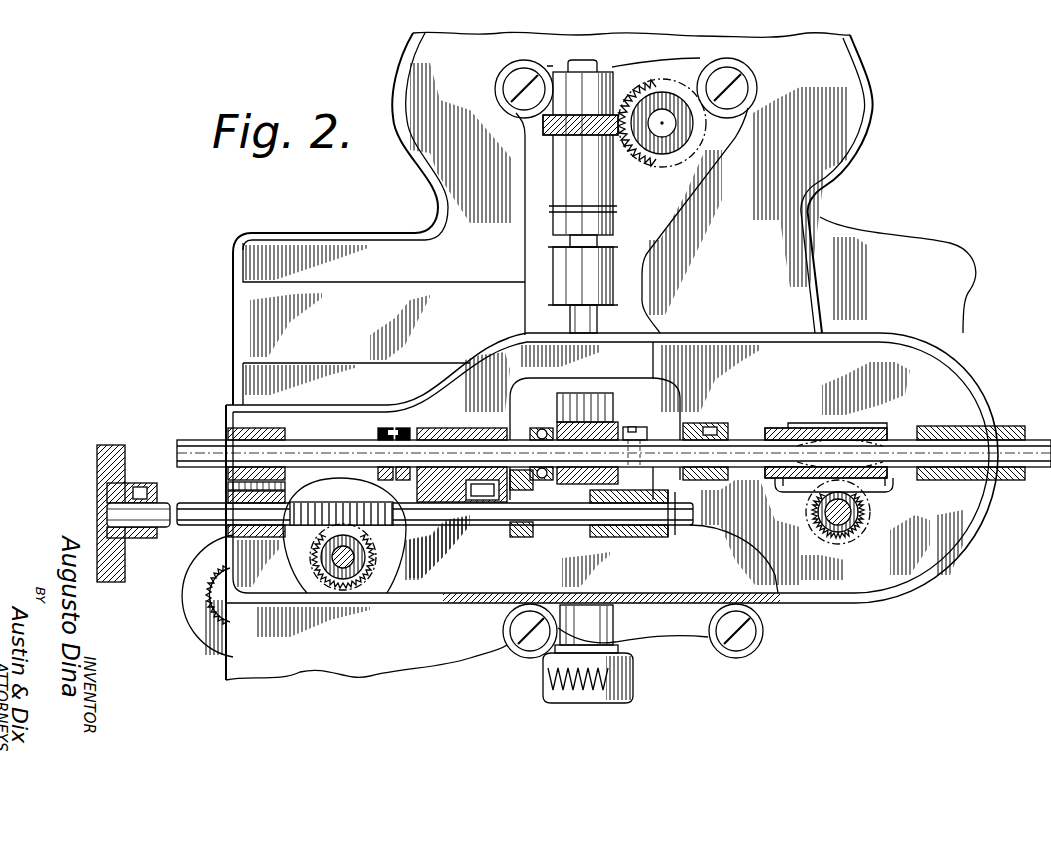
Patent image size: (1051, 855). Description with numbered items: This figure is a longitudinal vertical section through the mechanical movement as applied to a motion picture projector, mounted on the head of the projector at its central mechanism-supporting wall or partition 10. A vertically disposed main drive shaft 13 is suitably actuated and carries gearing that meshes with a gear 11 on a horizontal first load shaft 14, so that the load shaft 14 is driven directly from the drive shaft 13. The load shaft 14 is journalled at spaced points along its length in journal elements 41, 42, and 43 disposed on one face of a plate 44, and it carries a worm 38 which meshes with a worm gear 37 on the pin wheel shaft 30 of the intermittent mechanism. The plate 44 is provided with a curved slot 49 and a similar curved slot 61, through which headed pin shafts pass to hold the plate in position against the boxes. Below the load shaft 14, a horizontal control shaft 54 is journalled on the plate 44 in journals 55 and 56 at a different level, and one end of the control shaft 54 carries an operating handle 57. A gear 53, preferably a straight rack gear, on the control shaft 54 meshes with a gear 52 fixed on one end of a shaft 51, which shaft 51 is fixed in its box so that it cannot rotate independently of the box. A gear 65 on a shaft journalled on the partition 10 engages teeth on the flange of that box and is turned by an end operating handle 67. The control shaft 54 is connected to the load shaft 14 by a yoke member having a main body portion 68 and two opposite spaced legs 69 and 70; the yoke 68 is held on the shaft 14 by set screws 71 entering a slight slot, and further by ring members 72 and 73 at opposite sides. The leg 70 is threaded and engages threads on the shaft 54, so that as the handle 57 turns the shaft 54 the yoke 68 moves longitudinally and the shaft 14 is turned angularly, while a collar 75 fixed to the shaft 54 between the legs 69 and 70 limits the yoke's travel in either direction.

The mechanism-supporting wall or partition 10 is at (604, 218).
The gear 11 is at (599, 418).
The main drive shaft 13 is at (585, 316).
The first load shaft 14 is at (745, 440).
The pin wheel shaft 30 is at (852, 508).
The worm gear 37 is at (812, 514).
The worm 38 is at (802, 428).
The journal element 41 is at (225, 432).
The journal element 42 is at (723, 412).
The journal element 43 is at (1005, 426).
The plate 44 is at (612, 506).
The curved slot 49 is at (873, 488).
The shaft 51 is at (344, 568).
The gear 52 is at (380, 558).
The gear 53 is at (308, 549).
The control shaft 54 is at (203, 503).
The journal 55 is at (217, 535).
The journal 56 is at (628, 536).
The operating handle 57 is at (110, 486).
The curved slot 61 is at (318, 498).
The gear 65 is at (205, 589).
The operating handle 67 is at (195, 618).
The yoke member main body portion 68 is at (455, 419).
The leg or limb portion 69 is at (440, 548).
The leg or limb portion 70 is at (522, 522).
The set screws 71 is at (380, 427).
The ring member 72 is at (405, 427).
The ring member 73 is at (541, 427).
The collar 75 is at (482, 505).